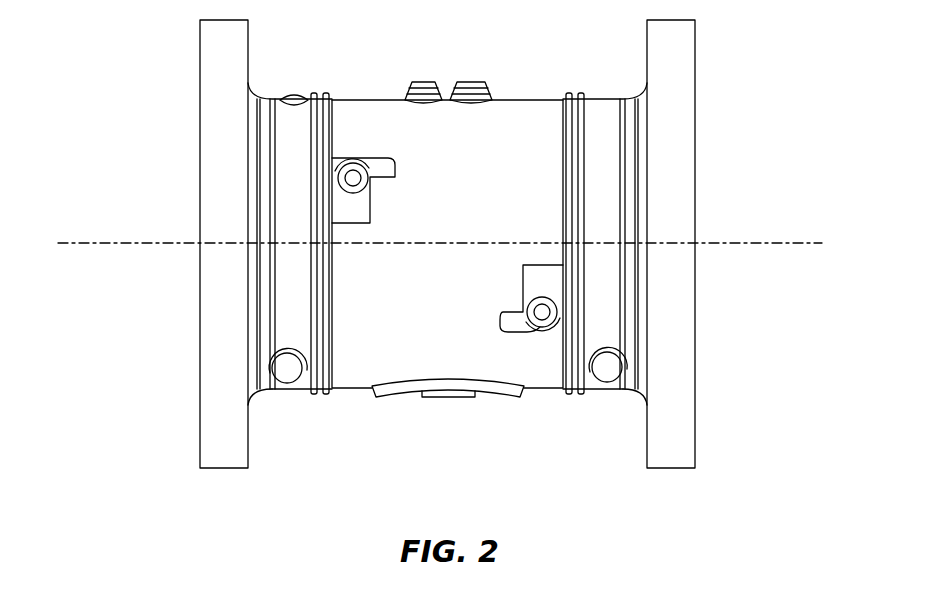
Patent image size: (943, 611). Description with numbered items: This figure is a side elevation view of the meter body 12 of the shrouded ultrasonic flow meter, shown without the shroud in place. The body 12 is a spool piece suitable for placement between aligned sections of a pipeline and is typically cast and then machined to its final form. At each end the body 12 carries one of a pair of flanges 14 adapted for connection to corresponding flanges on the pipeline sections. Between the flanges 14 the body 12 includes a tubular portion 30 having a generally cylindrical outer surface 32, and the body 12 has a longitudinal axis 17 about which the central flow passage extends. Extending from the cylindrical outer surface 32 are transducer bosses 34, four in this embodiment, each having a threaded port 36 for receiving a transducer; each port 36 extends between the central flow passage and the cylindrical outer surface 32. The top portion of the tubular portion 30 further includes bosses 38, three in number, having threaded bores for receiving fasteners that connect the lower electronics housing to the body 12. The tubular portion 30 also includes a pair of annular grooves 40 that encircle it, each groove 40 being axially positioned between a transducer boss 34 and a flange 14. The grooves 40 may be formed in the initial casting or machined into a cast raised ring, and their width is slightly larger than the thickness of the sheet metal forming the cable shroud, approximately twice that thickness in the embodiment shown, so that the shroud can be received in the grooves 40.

The meter body 12 is at (504, 249).
The flanges 14 is at (695, 143).
The longitudinal axis 17 is at (127, 243).
The tubular portion 30 is at (505, 127).
The cylindrical outer surface 32 is at (550, 101).
The transducer bosses 34 is at (384, 163).
The threaded ports 36 is at (353, 180).
The bosses 38 is at (470, 82).
The annular grooves 40 is at (587, 80).